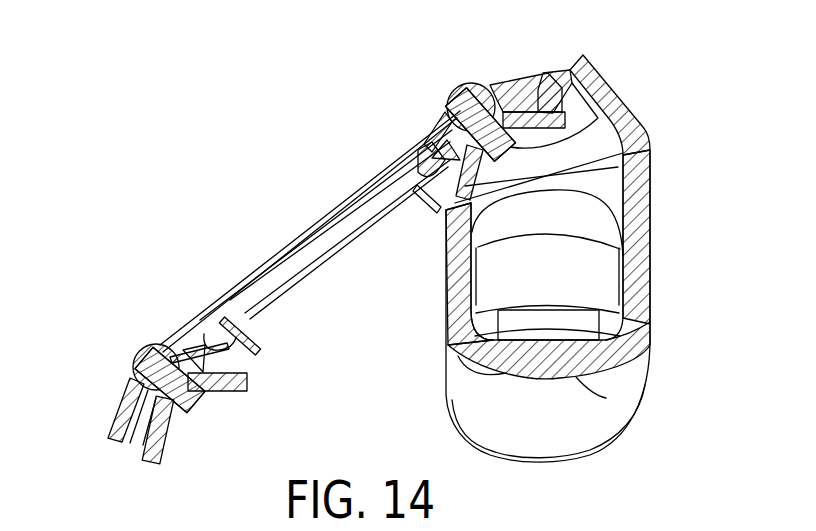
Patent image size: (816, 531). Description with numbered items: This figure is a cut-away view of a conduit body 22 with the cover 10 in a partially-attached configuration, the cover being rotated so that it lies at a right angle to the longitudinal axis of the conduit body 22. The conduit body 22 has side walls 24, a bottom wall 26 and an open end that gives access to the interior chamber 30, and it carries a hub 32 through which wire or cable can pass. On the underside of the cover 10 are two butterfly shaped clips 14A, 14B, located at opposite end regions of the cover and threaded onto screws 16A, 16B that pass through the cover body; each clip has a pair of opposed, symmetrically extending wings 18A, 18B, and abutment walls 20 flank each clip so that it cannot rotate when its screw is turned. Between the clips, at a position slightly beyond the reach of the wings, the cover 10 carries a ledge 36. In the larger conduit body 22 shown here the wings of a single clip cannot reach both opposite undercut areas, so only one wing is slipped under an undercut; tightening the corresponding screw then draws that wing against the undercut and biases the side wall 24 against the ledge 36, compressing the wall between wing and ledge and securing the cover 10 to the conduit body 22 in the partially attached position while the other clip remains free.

The cover 10 is at (222, 182).
The butterfly shaped clip 14A is at (588, 80).
The butterfly shaped clip 14B is at (196, 413).
The screw 16A is at (476, 83).
The screw 16B is at (133, 367).
The wing 18A is at (537, 110).
The wing 18B is at (247, 378).
The abutment wall 20 is at (510, 84).
The conduit body 22 is at (651, 240).
The side wall 24 is at (641, 100).
The bottom wall 26 is at (606, 398).
The interior chamber 30 is at (573, 223).
The hub 32 is at (596, 464).
The ledge 36 is at (245, 343).